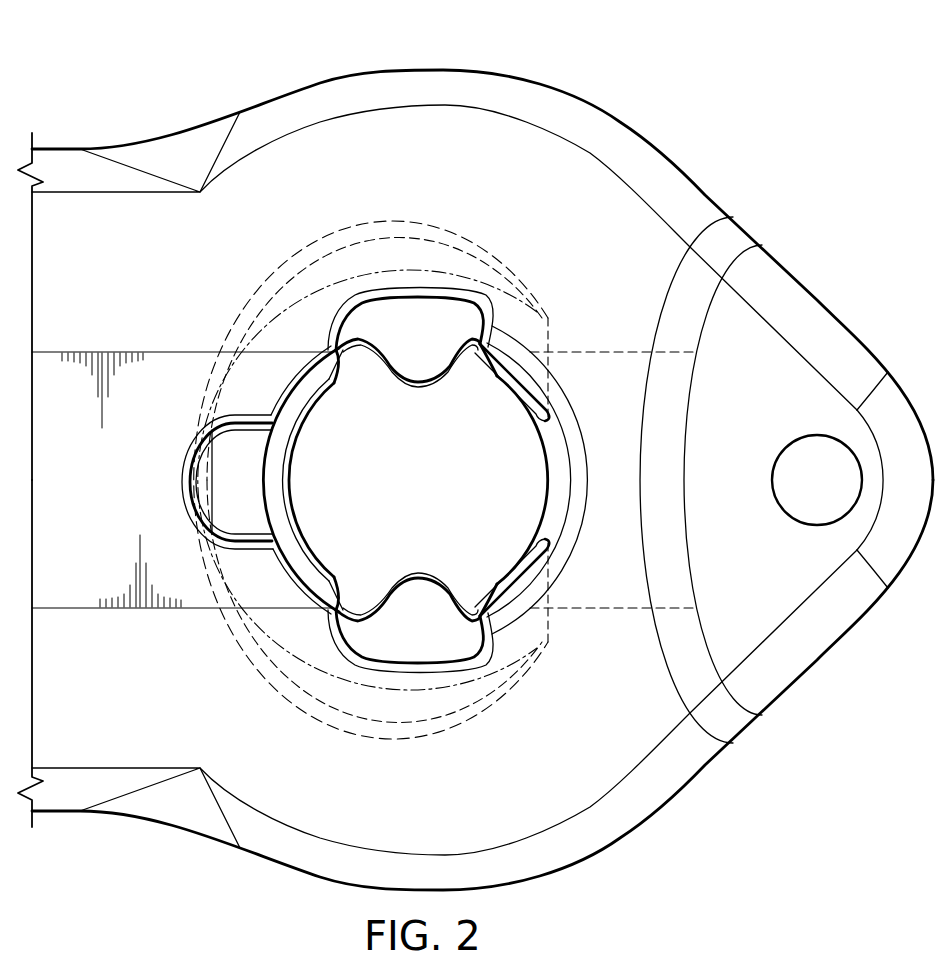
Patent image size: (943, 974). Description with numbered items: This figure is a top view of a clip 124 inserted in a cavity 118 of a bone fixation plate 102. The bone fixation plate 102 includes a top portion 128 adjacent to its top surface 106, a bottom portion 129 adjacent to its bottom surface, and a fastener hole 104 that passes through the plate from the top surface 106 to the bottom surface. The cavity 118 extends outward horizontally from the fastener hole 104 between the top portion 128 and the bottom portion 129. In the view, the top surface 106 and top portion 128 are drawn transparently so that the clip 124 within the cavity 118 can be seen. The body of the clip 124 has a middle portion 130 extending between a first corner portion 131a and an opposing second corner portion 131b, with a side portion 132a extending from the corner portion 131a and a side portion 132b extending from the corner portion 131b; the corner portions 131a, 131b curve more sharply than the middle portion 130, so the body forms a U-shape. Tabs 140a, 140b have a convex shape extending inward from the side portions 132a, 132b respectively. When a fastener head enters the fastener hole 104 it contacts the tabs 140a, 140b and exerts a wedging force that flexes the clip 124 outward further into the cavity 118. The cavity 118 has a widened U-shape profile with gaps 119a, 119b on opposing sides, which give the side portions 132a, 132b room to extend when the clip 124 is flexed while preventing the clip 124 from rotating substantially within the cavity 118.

The bone fixation plate 102 is at (470, 62).
The fastener hole 104 is at (530, 458).
The top surface 106 is at (587, 188).
The cavity 118 is at (438, 248).
The gap 119a is at (477, 265).
The gap 119b is at (480, 700).
The clip 124 is at (338, 262).
The top portion 128 is at (295, 566).
The bottom portion 129 is at (293, 485).
The middle portion 130 is at (230, 478).
The first corner portion 131a is at (303, 313).
The second corner portion 131b is at (300, 650).
The side portion 132a is at (417, 312).
The side portion 132b is at (418, 647).
The tab 140a is at (421, 371).
The tab 140b is at (418, 600).